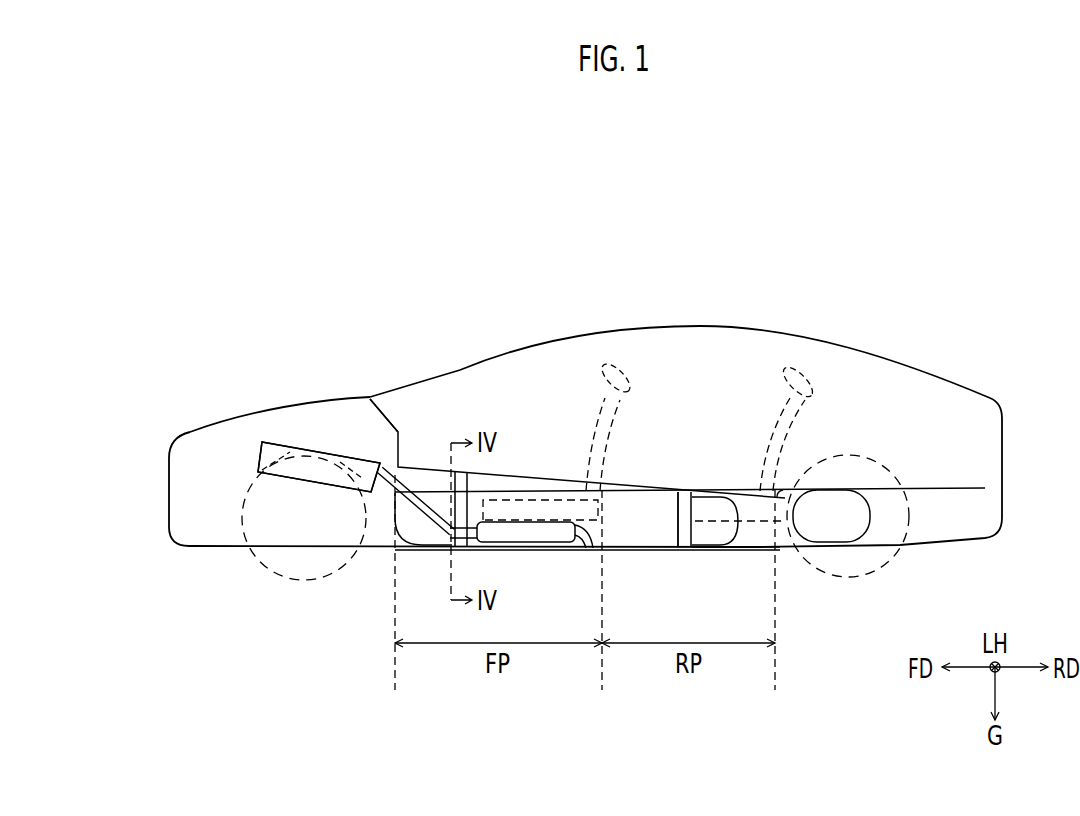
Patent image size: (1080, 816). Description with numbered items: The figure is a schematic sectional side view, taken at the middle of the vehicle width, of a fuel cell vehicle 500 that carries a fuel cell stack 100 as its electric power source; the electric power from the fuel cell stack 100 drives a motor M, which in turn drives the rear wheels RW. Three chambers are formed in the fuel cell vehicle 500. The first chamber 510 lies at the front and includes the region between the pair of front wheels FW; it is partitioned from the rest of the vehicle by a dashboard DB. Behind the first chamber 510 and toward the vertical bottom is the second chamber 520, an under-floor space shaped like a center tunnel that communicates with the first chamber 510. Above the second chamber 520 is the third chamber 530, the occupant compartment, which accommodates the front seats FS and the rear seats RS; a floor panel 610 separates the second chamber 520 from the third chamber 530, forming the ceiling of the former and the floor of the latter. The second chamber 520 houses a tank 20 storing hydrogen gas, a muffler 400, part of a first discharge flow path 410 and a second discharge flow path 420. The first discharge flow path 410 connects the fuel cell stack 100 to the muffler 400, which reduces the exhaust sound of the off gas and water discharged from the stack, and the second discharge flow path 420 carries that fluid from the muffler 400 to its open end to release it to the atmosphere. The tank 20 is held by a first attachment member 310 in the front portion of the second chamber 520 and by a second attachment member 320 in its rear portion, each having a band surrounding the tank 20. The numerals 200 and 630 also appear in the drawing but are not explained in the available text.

The tank 20 is at (640, 530).
The fuel cell stack 100 is at (285, 442).
The fuel cell unit 200 is at (320, 441).
The first attachment member 310 is at (462, 512).
The second attachment member 320 is at (684, 528).
The muffler 400 is at (513, 540).
The first discharge flow path 410 is at (431, 518).
The second discharge flow path 420 is at (595, 549).
The fuel cell vehicle 500 is at (748, 327).
The first chamber 510 is at (362, 433).
The second chamber 520 is at (748, 540).
The third chamber 530 is at (672, 365).
The floor panel 610 is at (676, 493).
The battery 630 is at (705, 548).
The dashboard DB is at (384, 415).
The front seats FS is at (597, 425).
The rear seats RS is at (772, 425).
The front wheels FW is at (286, 579).
The rear wheels RW is at (870, 574).
The motor M is at (870, 518).